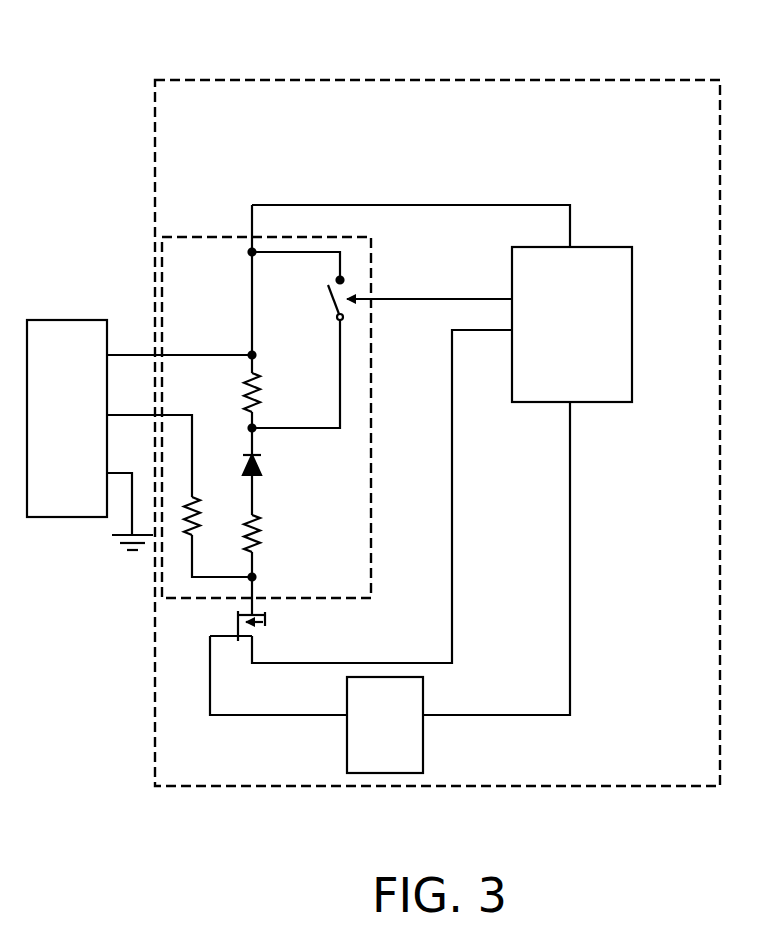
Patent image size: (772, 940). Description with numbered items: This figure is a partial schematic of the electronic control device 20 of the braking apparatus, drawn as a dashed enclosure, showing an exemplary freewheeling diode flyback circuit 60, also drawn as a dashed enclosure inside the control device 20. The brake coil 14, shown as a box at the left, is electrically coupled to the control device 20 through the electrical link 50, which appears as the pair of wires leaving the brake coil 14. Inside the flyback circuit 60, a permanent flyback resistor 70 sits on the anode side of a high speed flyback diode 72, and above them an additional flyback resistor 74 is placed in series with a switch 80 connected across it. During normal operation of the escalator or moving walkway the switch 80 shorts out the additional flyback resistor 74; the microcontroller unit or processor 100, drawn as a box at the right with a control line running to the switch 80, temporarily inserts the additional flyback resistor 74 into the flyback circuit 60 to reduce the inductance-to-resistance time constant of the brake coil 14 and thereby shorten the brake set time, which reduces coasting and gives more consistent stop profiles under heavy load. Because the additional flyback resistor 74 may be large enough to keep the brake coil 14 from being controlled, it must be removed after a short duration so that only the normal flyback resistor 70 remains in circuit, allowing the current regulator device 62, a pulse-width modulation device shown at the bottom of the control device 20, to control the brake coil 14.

The electronic control device 20 is at (400, 79).
The brake coil 14 is at (79, 436).
The electrical link 50 is at (136, 398).
The freewheeling diode flyback circuit 60 is at (372, 518).
The current regulator device 62 is at (399, 736).
The permanent flyback resistor 70 is at (268, 530).
The high speed flyback diode 72 is at (268, 464).
The additional flyback resistor 74 is at (267, 388).
The switch 80 is at (316, 300).
The processor 100 is at (594, 334).